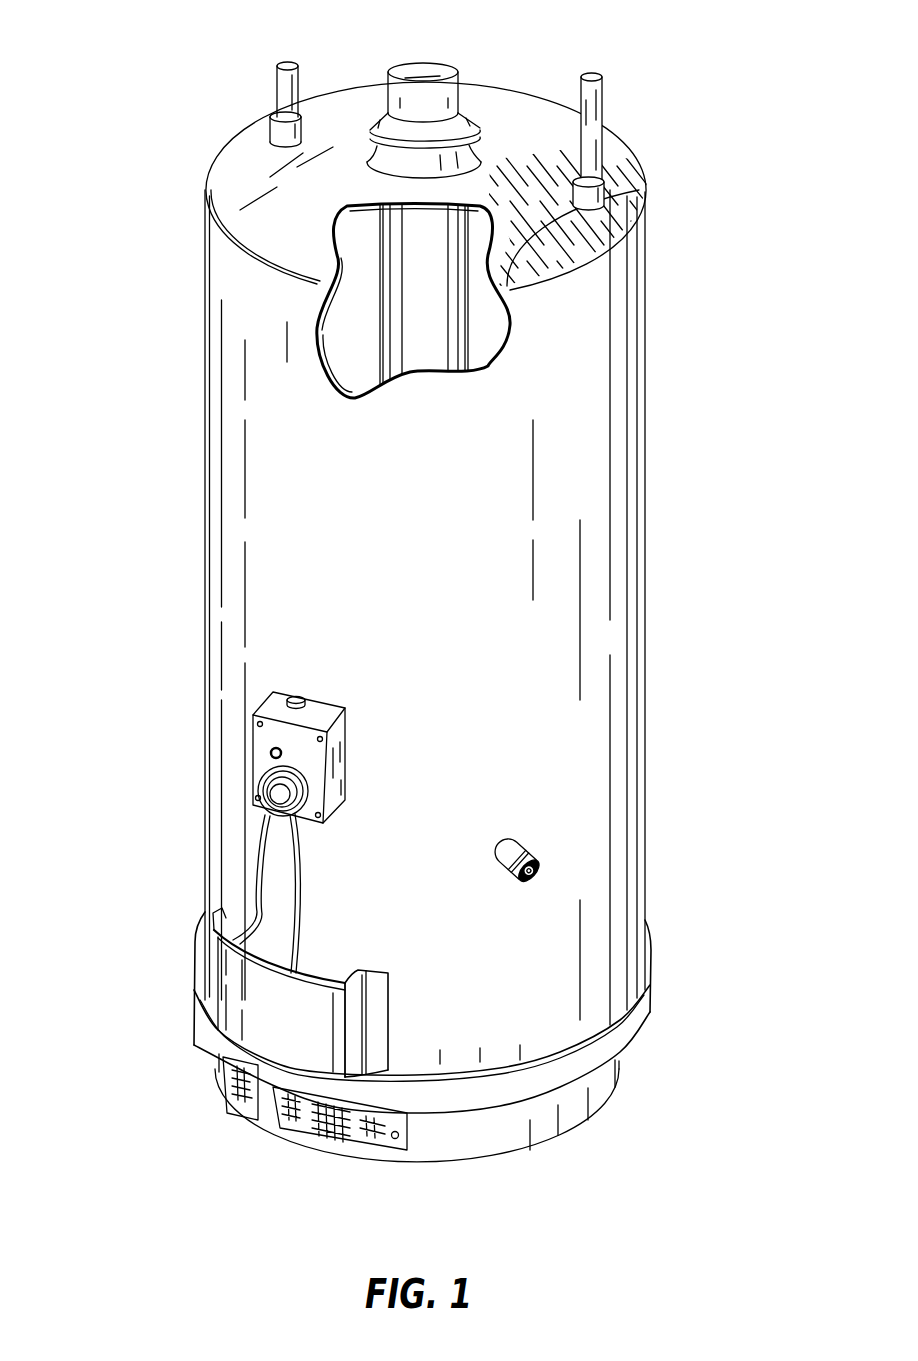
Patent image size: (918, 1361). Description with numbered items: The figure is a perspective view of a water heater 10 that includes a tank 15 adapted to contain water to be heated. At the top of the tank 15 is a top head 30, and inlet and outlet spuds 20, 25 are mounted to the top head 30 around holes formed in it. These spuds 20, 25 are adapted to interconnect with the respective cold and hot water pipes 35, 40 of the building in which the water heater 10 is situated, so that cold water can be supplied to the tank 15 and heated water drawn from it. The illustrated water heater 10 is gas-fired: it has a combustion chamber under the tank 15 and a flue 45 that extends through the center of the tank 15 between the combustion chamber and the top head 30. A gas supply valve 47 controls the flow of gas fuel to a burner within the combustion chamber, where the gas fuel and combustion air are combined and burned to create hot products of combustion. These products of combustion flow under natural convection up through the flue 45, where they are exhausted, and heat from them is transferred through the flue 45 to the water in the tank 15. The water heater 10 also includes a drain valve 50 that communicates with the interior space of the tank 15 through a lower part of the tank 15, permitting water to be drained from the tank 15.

The water heater 10 is at (141, 374).
The tank 15 is at (630, 462).
The inlet spud 20 is at (595, 198).
The outlet spud 25 is at (276, 130).
The top head 30 is at (507, 107).
The cold water pipe 35 is at (593, 95).
The hot water pipe 40 is at (292, 82).
The flue 45 is at (397, 343).
The gas supply valve 47 is at (320, 712).
The drain valve 50 is at (499, 815).